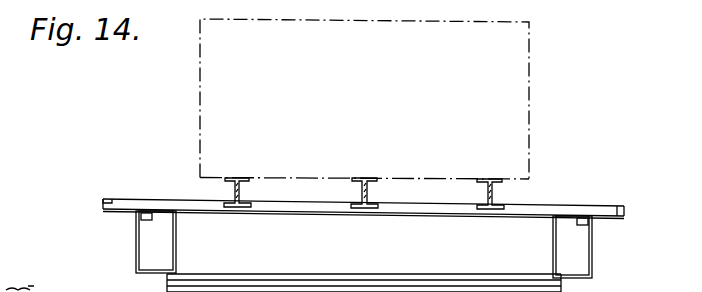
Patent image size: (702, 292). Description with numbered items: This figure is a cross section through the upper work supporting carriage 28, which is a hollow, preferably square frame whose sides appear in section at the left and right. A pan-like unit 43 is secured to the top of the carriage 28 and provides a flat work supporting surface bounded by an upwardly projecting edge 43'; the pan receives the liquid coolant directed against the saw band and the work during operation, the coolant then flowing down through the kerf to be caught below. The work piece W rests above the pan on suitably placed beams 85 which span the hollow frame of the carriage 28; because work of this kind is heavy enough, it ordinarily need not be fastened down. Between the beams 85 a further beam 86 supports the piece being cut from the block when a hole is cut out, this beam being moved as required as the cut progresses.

The work piece W is at (518, 76).
The pan-like unit 43 is at (363, 195).
The upwardly projecting edge 43' is at (94, 188).
The upper work supporting carriage 28 is at (177, 242).
The beams 85 is at (244, 185).
The beam 86 is at (371, 185).